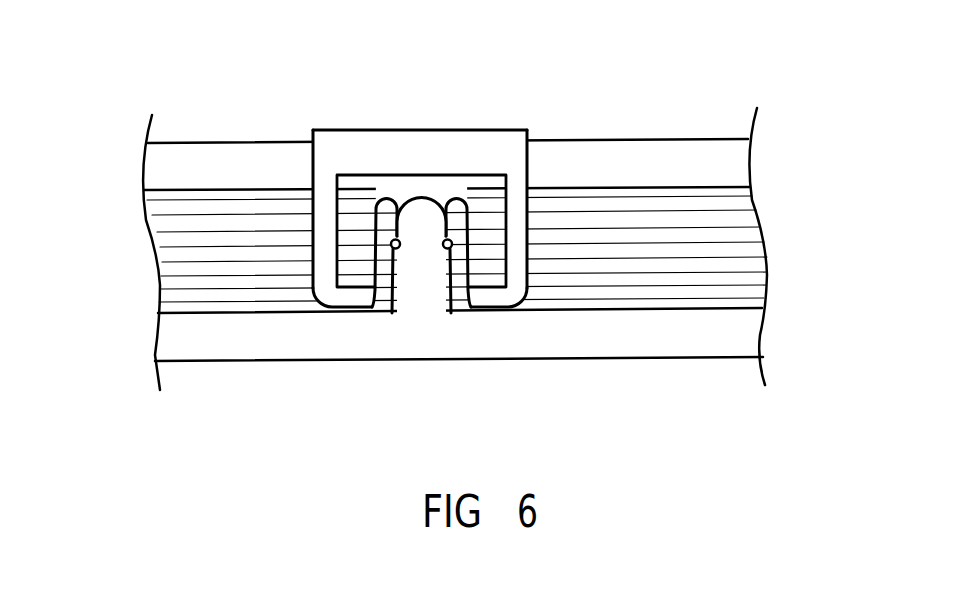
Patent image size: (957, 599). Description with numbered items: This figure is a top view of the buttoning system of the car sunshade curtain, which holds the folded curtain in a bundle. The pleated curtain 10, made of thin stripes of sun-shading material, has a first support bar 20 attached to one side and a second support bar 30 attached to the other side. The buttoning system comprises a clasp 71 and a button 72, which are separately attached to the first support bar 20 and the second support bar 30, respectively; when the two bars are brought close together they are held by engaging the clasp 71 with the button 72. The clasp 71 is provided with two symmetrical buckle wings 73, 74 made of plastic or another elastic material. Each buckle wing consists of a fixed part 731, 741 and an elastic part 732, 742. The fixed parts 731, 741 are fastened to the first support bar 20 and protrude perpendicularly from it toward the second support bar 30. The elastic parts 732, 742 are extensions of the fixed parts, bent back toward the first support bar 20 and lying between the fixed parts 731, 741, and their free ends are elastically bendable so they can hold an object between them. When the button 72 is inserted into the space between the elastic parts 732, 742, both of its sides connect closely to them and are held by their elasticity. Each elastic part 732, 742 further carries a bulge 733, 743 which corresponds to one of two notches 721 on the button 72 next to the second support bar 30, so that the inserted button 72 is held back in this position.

The pleated curtain 10 is at (720, 242).
The first support bar 20 is at (645, 160).
The second support bar 30 is at (587, 330).
The clasp 71 is at (377, 247).
The button 72 is at (430, 250).
The notches 721 is at (403, 252).
The buckle wing 73 is at (334, 305).
The fixed part 731 is at (323, 212).
The elastic part 732 is at (387, 213).
The bulge 733 is at (397, 240).
The buckle wing 74 is at (498, 297).
The fixed part 741 is at (518, 230).
The elastic part 742 is at (461, 218).
The bulge 743 is at (443, 258).